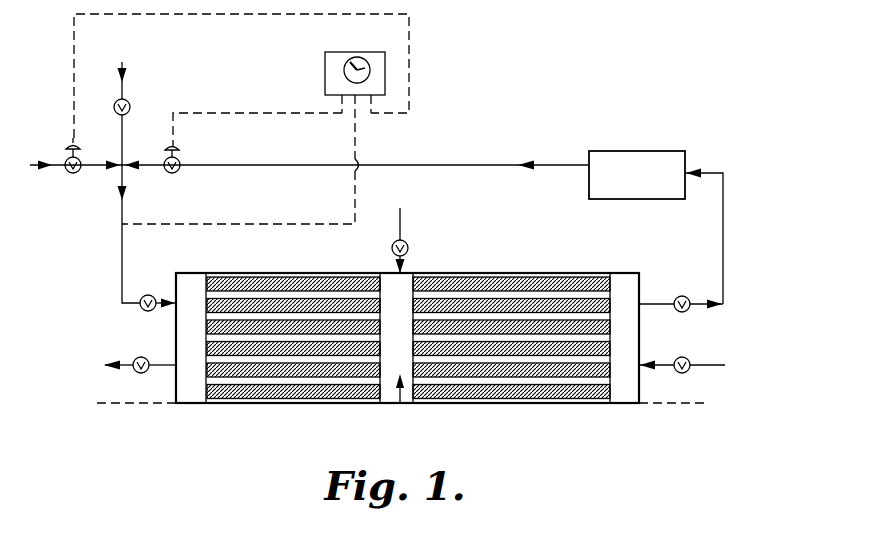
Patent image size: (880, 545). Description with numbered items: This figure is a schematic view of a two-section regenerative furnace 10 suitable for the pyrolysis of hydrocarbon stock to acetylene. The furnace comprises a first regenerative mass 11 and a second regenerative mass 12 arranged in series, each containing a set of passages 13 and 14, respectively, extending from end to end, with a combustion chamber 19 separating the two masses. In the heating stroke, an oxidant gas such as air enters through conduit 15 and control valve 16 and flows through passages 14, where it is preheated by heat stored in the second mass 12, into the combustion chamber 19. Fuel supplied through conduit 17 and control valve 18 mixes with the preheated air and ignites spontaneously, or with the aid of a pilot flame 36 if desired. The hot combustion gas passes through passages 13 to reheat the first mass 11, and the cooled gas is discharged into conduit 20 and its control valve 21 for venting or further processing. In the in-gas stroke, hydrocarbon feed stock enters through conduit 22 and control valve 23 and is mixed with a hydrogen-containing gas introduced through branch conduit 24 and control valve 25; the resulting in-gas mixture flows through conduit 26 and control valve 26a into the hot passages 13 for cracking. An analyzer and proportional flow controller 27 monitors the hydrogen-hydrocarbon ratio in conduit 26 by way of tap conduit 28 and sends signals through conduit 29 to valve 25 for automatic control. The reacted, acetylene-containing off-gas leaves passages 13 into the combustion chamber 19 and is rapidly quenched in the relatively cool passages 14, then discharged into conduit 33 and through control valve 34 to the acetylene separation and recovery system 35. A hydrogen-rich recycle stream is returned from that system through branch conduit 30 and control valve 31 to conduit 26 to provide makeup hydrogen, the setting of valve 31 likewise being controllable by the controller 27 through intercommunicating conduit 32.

The regenerative furnace 10 is at (208, 268).
The first regenerative mass 11 is at (240, 395).
The second regenerative mass 12 is at (485, 396).
The passages 13 is at (284, 318).
The passages 14 is at (530, 313).
The conduit 15 is at (709, 367).
The control valve 16 is at (687, 358).
The conduit 17 is at (401, 218).
The control valve 18 is at (409, 248).
The combustion chamber 19 is at (391, 292).
The conduit 20 is at (112, 363).
The control valve 21 is at (142, 356).
The conduit 22 is at (124, 89).
The control valve 23 is at (129, 103).
The branch conduit 24 is at (65, 171).
The control valve 25 is at (78, 173).
The conduit 26 is at (122, 250).
The control valve 26a is at (140, 305).
The analyzer and proportional flow controller 27 is at (325, 63).
The tap conduit 28 is at (237, 222).
The conduit 29 is at (260, 16).
The branch conduit 30 is at (496, 162).
The control valve 31 is at (180, 161).
The intercommunicating conduit 32 is at (289, 112).
The conduit 33 is at (723, 268).
The control valve 34 is at (681, 295).
The acetylene separation and recovery system 35 is at (642, 186).
The pilot flame 36 is at (397, 405).